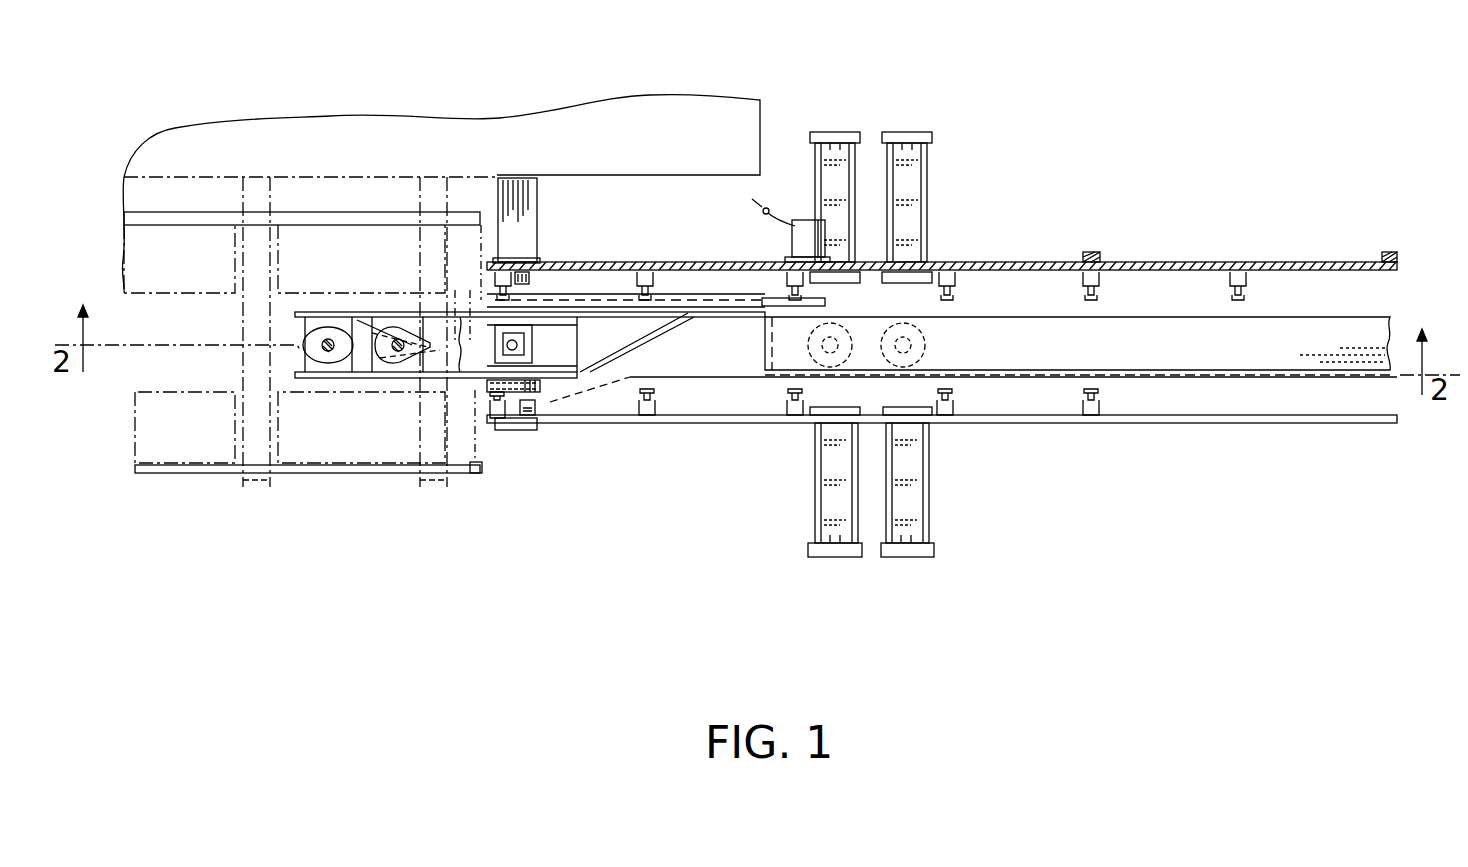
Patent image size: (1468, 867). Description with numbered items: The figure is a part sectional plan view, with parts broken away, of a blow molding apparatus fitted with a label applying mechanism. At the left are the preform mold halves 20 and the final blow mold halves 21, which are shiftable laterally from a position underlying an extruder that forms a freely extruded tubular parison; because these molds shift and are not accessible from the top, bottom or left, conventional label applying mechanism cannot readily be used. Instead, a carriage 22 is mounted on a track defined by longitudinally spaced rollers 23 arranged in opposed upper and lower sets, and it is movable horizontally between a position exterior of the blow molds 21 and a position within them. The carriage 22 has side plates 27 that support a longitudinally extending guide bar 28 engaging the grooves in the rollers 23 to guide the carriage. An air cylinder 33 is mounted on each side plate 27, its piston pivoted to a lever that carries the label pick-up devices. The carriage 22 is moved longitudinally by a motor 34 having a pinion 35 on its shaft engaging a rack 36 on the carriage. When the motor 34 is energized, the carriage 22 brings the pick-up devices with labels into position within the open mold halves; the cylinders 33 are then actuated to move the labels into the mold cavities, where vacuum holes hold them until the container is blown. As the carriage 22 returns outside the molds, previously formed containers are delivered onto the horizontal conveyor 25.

The preform mold halves 20 is at (179, 275).
The final blow mold halves 21 is at (352, 275).
The carriage 22 is at (559, 407).
The rollers 23 is at (497, 292).
The horizontal conveyor 25 is at (1132, 361).
The side plates 27 is at (428, 334).
The guide bar 28 is at (677, 306).
The air cylinder 33 is at (512, 292).
The motor 34 is at (790, 243).
The pinion 35 is at (815, 299).
The rack 36 is at (973, 357).